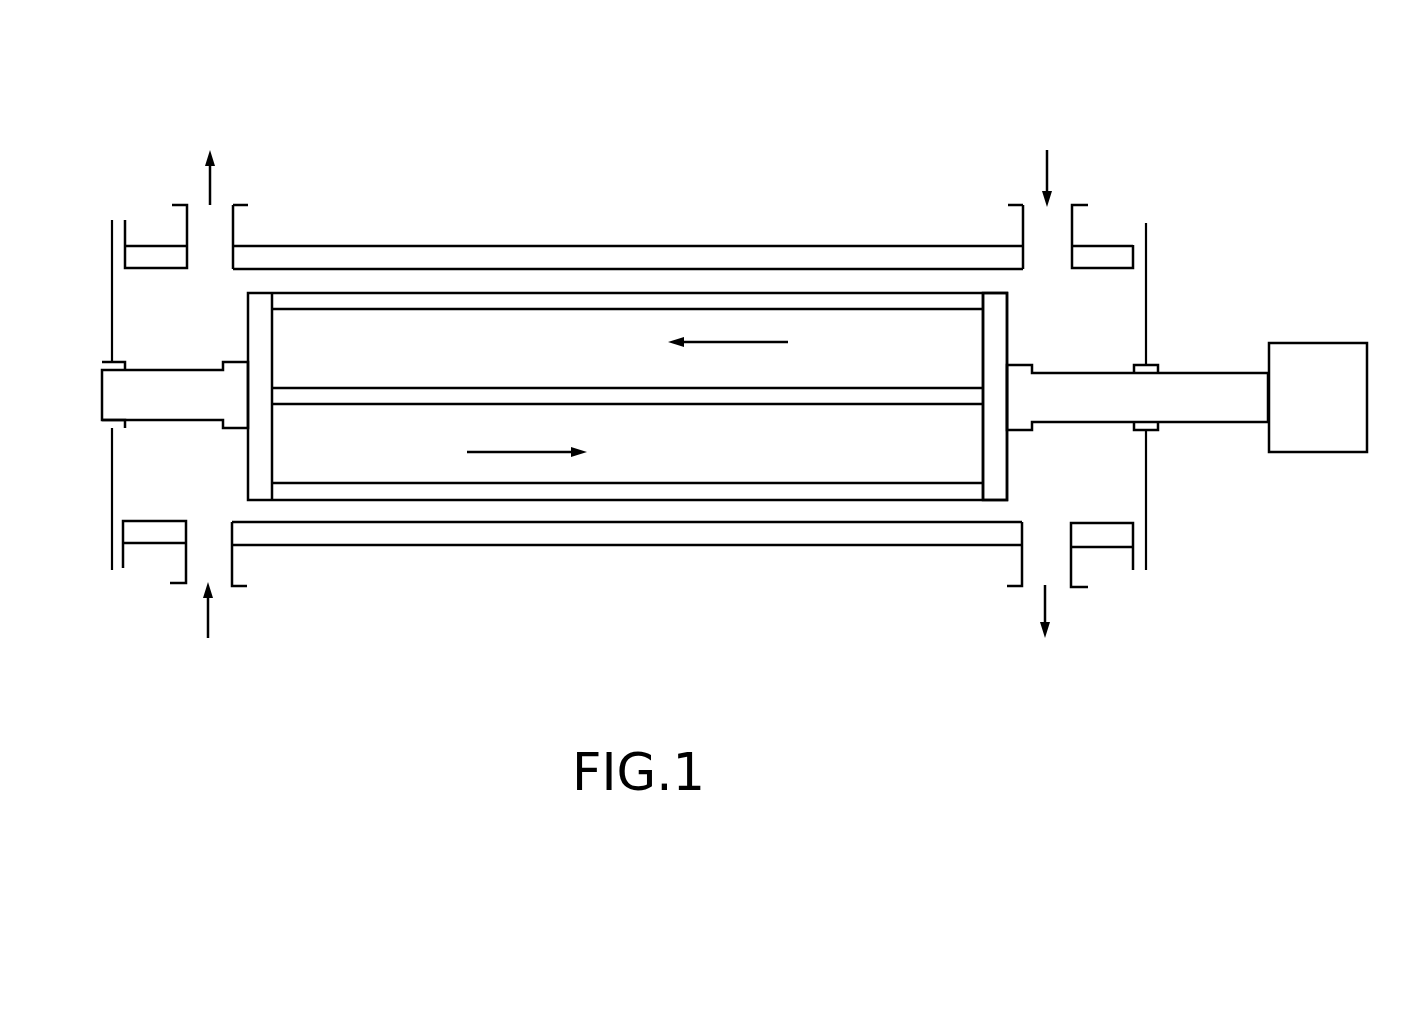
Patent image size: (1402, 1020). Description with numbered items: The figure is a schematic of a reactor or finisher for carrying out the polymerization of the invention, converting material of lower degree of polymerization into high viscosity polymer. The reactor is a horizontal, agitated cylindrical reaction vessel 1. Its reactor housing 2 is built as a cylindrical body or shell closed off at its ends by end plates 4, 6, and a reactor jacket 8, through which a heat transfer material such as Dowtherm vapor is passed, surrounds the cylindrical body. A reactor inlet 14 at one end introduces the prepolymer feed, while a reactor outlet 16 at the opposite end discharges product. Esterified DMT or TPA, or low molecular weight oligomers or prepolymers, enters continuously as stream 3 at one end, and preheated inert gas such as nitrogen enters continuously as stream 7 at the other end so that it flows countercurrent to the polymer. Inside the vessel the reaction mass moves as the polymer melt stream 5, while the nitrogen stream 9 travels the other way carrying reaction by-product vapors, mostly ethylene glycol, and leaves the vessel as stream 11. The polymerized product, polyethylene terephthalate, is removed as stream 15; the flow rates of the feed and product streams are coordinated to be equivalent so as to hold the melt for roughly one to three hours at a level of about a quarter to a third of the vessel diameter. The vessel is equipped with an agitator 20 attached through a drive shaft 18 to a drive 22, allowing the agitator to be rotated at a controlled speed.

The cylindrical reaction vessel 1 is at (669, 309).
The reactor housing 2 is at (628, 393).
The stream 3 is at (211, 630).
The end plate 4 is at (110, 544).
The polymer melt stream 5 is at (522, 451).
The end plate 6 is at (1147, 505).
The stream 7 is at (1048, 159).
The reactor jacket 8 is at (451, 246).
The nitrogen stream 9 is at (730, 343).
The stream 11 is at (216, 159).
The reactor inlet 14 is at (232, 565).
The stream 15 is at (1046, 628).
The reactor outlet 16 is at (1020, 560).
The drive shaft 18 is at (1178, 372).
The agitator 20 is at (1008, 338).
The drive 22 is at (1333, 343).